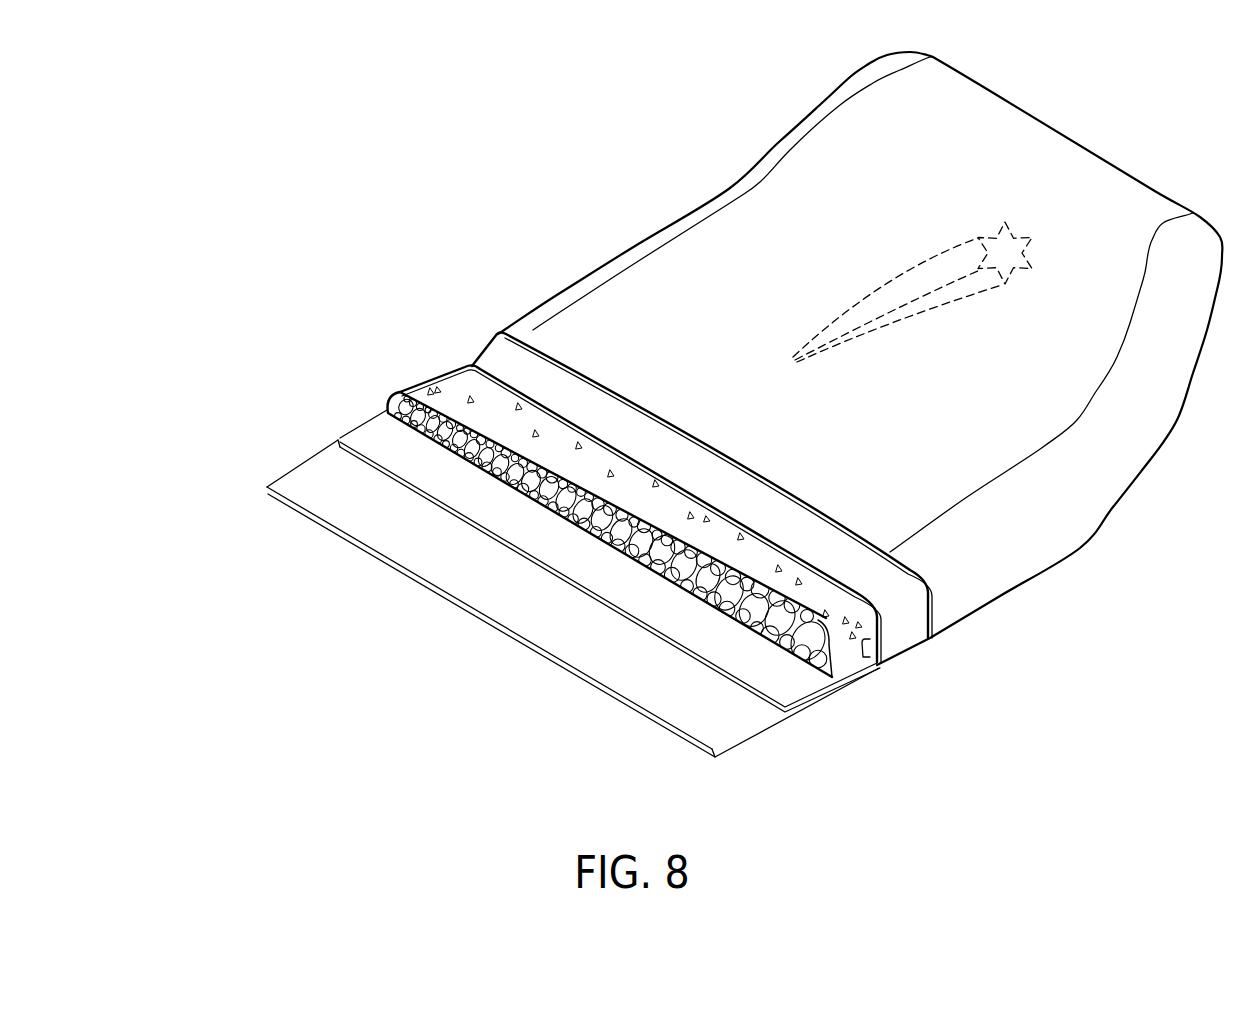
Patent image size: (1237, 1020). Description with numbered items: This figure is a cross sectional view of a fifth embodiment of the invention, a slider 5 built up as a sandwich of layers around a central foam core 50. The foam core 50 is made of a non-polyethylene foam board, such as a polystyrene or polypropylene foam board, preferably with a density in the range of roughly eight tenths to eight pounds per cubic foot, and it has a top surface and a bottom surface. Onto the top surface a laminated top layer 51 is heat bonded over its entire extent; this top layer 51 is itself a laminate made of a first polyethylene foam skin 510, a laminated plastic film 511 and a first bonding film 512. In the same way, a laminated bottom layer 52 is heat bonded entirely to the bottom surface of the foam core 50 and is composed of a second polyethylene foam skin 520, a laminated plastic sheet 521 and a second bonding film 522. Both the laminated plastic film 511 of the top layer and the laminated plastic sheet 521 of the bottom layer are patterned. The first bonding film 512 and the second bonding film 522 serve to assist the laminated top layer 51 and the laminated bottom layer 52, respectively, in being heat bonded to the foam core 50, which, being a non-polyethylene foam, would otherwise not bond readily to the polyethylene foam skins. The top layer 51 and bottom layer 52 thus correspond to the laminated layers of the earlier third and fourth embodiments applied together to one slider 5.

The slider 5 is at (540, 252).
The foam core 50 is at (447, 382).
The laminated top layer 51 is at (1078, 738).
The first polyethylene foam skin 510 is at (903, 643).
The laminated plastic film 511 is at (980, 587).
The first bonding film 512 is at (867, 658).
The laminated bottom layer 52 is at (277, 289).
The second polyethylene foam skin 520 is at (358, 440).
The laminated plastic sheet 521 is at (322, 490).
The second bonding film 522 is at (383, 417).